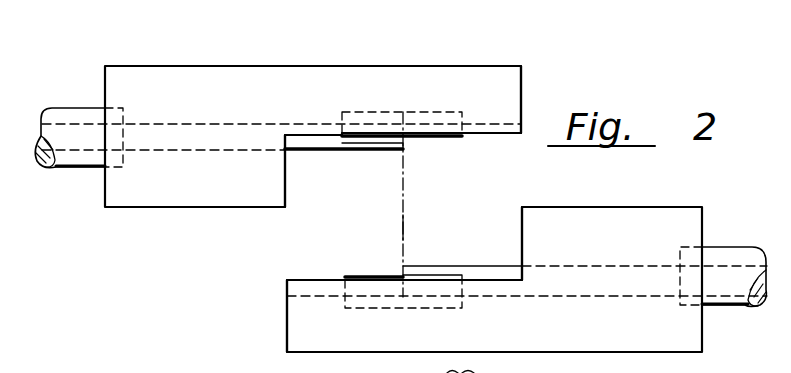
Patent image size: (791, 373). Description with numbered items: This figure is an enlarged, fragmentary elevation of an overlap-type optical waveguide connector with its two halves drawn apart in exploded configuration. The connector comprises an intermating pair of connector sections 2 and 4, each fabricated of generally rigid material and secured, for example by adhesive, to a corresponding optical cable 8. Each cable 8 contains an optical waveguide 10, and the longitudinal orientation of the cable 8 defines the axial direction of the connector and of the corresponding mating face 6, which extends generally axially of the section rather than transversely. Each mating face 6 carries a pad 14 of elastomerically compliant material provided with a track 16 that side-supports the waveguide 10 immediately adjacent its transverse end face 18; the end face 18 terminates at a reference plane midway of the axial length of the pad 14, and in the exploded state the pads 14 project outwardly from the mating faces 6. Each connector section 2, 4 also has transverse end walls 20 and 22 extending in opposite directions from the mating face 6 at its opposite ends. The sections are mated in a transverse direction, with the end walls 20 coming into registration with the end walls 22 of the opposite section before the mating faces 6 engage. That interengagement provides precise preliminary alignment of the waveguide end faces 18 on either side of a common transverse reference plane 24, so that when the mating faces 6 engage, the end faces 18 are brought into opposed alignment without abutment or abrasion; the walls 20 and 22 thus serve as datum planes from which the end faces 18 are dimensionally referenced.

The connector section 2 is at (326, 71).
The connector section 4 is at (660, 213).
The mating face 6 is at (509, 133).
The optical cable 8 is at (70, 108).
The optical waveguide 10 is at (348, 156).
The pad 14 is at (461, 134).
The track 16 is at (325, 278).
The end face 18 is at (403, 144).
The end wall 20 is at (513, 91).
The end wall 22 is at (286, 197).
The transverse reference plane 24 is at (405, 230).